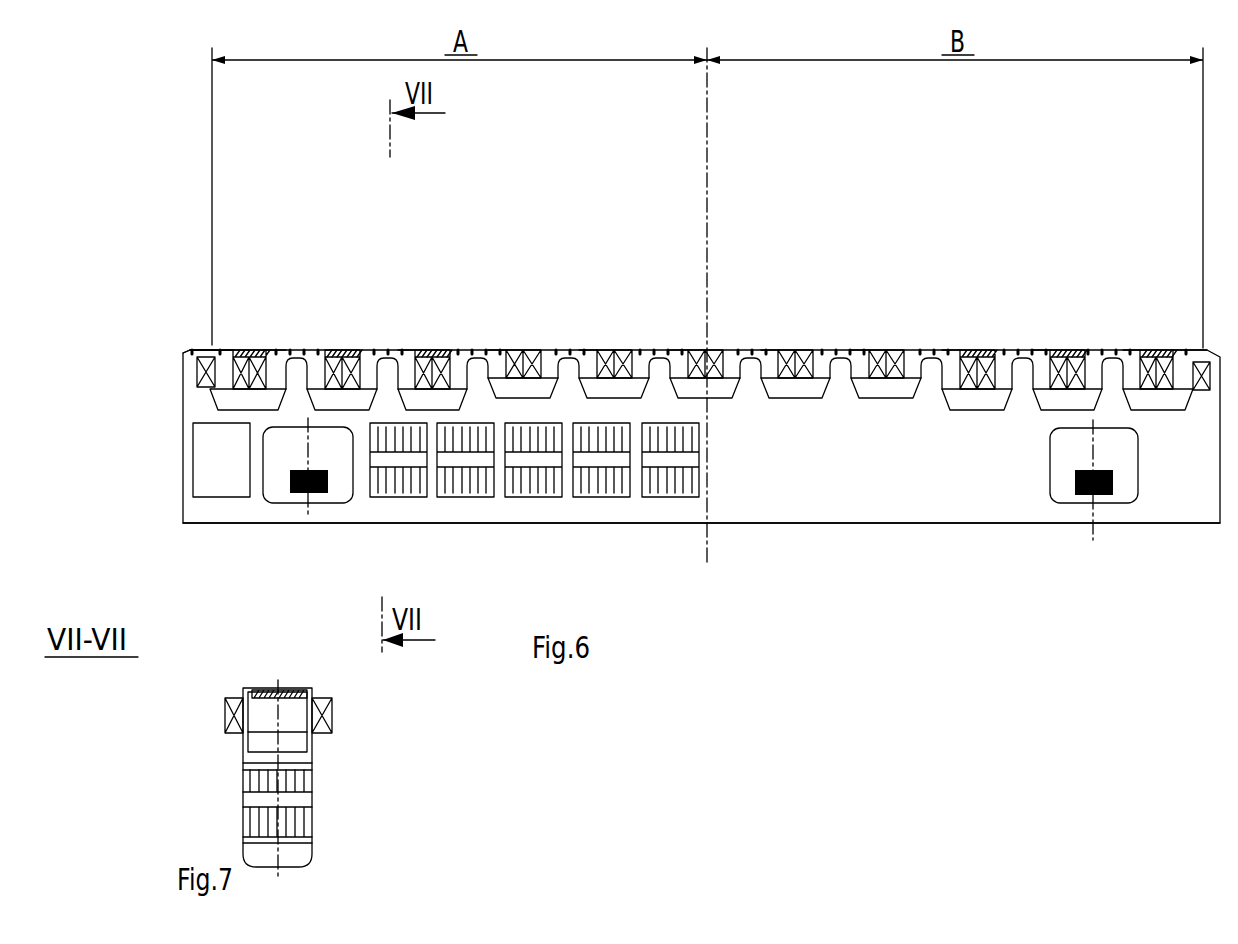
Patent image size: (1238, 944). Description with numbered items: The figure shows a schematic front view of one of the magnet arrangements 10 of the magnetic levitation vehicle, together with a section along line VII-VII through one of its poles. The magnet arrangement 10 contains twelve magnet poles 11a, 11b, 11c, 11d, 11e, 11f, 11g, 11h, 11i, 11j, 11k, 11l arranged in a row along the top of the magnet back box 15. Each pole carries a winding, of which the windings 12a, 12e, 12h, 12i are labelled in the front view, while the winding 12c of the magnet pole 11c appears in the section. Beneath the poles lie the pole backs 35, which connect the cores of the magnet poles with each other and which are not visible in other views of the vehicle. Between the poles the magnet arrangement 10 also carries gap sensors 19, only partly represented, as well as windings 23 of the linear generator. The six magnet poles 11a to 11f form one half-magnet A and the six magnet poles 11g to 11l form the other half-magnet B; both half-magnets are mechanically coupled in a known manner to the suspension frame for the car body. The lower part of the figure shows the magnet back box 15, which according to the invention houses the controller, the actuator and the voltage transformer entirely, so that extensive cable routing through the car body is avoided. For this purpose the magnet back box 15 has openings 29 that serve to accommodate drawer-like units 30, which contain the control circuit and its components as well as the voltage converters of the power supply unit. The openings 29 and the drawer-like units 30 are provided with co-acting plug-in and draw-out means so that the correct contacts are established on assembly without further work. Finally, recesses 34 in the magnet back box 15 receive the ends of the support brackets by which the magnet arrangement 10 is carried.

In FIG. 6, the magnet arrangement 10 is at (745, 593).
In FIG. 6, the magnet pole 11a is at (220, 352).
In FIG. 6, the magnet pole 11b is at (280, 373).
In FIG. 6, the magnet pole 11c is at (407, 373).
In FIG. 7, the magnet pole 11c is at (263, 720).
In FIG. 6, the magnet pole 11d is at (492, 373).
In FIG. 6, the magnet pole 11e is at (585, 373).
In FIG. 6, the magnet pole 11f is at (675, 373).
In FIG. 6, the magnet pole 11g is at (768, 373).
In FIG. 6, the magnet pole 11h is at (858, 373).
In FIG. 6, the magnet pole 11i is at (950, 373).
In FIG. 6, the magnet pole 11j is at (1040, 373).
In FIG. 6, the magnet pole 11k is at (1128, 373).
In FIG. 6, the magnet pole 11l is at (1185, 373).
In FIG. 6, the winding 12a is at (197, 382).
In FIG. 7, the winding 12c is at (323, 700).
In FIG. 6, the winding 12e is at (607, 362).
In FIG. 6, the winding 12h is at (880, 362).
In FIG. 6, the winding 12i is at (970, 362).
In FIG. 6, the magnet back box 15 is at (918, 497).
In FIG. 7, the magnet back box 15 is at (312, 843).
In FIG. 6, the gap sensor 19 is at (255, 270).
In FIG. 6, the winding of the linear generator 23 is at (307, 373).
In FIG. 7, the winding of the linear generator 23 is at (257, 687).
In FIG. 6, the opening 29 is at (193, 480).
In FIG. 6, the drawer-like unit 30 is at (668, 497).
In FIG. 7, the drawer-like unit 30 is at (263, 825).
In FIG. 6, the recess 34 is at (1093, 495).
In FIG. 6, the pole back 35 is at (878, 390).
In FIG. 7, the pole back 35 is at (310, 750).